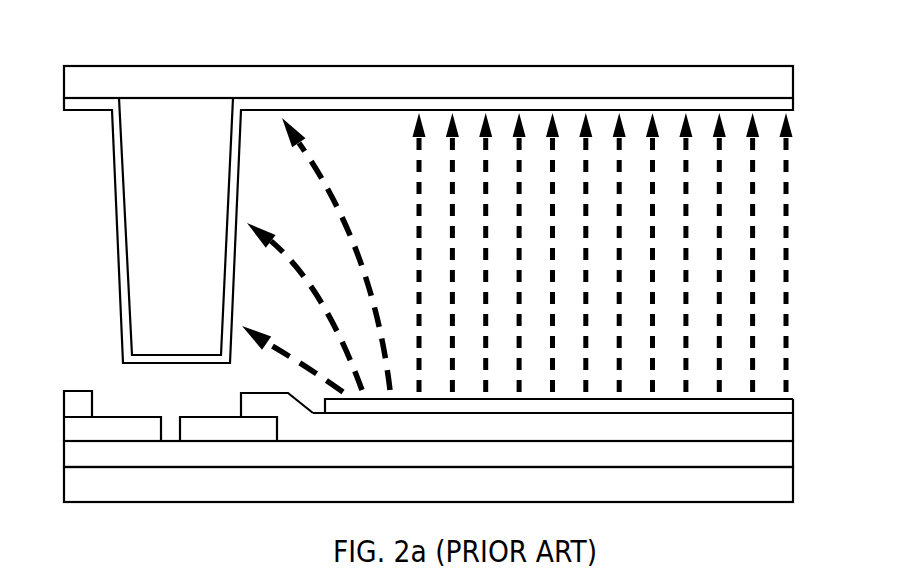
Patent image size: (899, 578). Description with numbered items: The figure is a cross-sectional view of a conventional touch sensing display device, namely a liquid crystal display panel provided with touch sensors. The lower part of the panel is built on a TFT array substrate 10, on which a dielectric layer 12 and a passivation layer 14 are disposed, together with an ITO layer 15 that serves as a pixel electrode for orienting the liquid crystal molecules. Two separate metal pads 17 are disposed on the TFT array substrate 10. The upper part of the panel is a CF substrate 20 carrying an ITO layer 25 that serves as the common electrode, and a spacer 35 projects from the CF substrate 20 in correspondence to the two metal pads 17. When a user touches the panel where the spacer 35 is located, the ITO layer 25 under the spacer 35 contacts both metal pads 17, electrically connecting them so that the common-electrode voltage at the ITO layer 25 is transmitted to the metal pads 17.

The TFT array substrate 10 is at (773, 488).
The dielectric layer 12 is at (773, 459).
The passivation layer 14 is at (773, 430).
The ITO layer 15 is at (773, 406).
The metal pads 17 is at (143, 430).
The CF substrate 20 is at (770, 83).
The ITO layer 25 is at (770, 105).
The spacer 35 is at (176, 120).